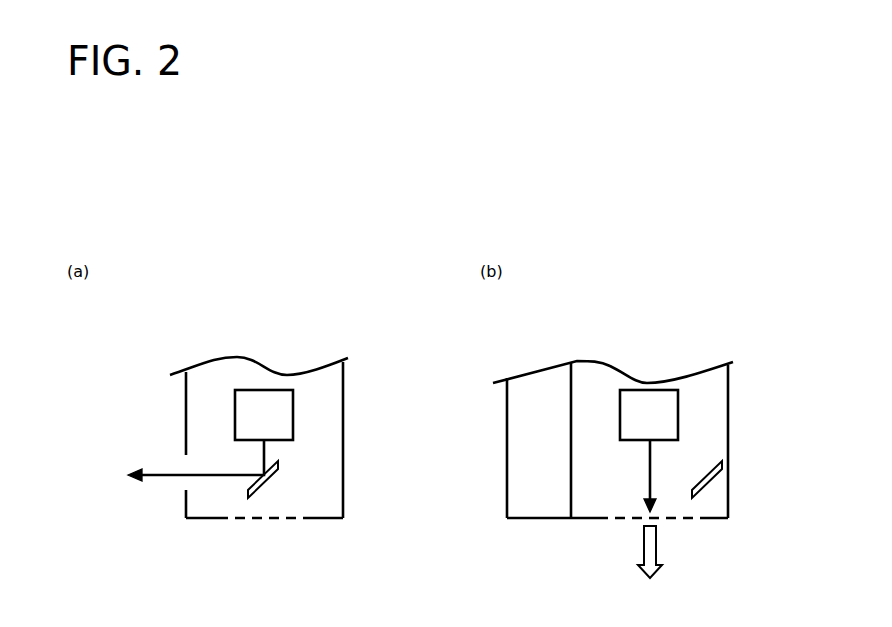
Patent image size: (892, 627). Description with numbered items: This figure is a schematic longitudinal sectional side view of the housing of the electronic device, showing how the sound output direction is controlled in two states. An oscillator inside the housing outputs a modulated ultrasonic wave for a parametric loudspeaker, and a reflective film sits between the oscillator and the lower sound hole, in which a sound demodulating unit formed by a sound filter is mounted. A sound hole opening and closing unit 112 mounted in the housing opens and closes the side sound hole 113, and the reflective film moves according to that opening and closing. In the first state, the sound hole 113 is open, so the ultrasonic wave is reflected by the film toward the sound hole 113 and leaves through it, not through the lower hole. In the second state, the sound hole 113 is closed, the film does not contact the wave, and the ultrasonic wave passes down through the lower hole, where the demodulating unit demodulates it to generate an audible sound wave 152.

The sound hole opening and closing unit 112 is at (537, 378).
The sound hole 113 is at (178, 457).
The audible sound wave 152 is at (657, 552).